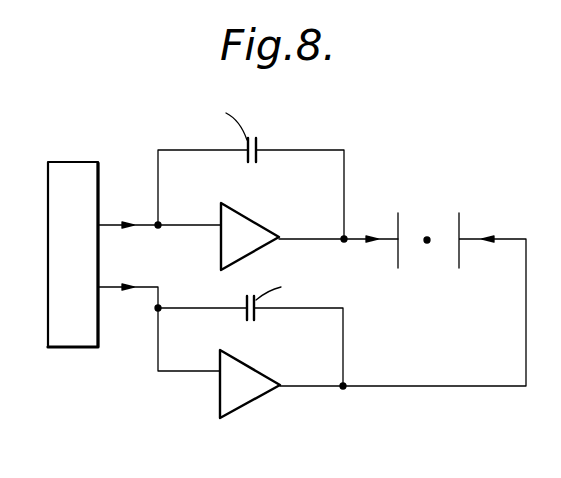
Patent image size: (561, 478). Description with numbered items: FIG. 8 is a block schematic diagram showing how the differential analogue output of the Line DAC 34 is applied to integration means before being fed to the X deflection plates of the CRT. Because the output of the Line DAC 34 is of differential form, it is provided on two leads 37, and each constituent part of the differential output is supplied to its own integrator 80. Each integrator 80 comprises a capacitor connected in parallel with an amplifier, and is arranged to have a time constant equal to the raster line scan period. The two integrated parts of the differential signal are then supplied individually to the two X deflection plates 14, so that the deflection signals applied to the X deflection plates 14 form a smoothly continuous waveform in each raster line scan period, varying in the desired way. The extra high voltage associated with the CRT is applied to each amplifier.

The Line DAC 34 is at (61, 330).
The leads 37 is at (150, 222).
The integrator 80 is at (275, 132).
The X deflection plates 14 is at (398, 255).